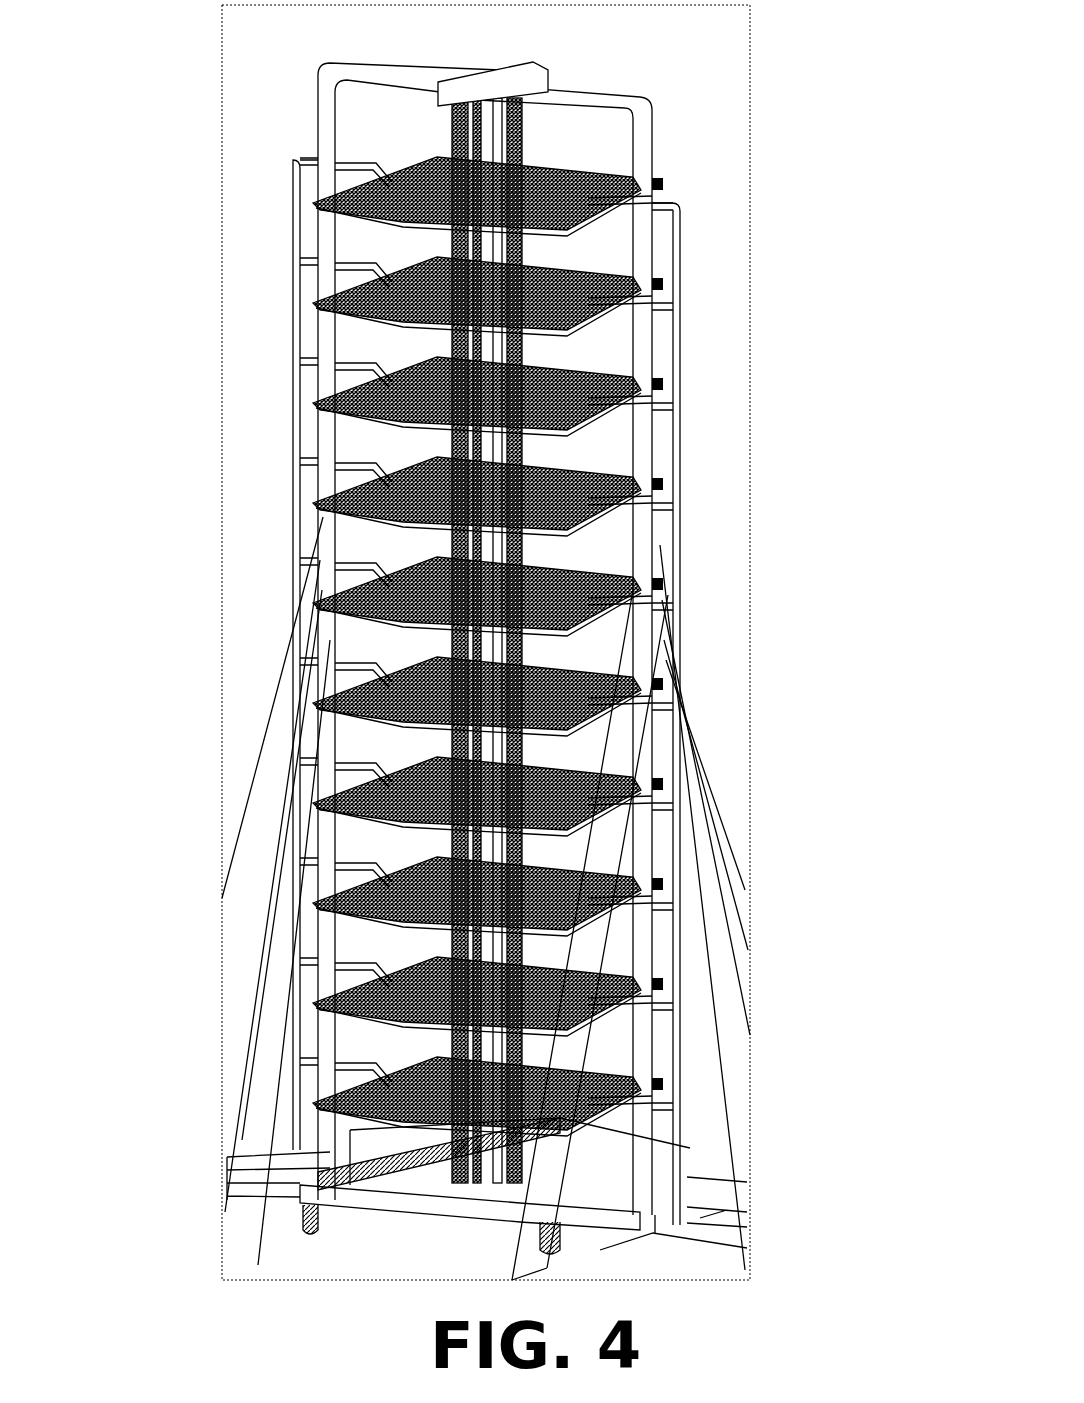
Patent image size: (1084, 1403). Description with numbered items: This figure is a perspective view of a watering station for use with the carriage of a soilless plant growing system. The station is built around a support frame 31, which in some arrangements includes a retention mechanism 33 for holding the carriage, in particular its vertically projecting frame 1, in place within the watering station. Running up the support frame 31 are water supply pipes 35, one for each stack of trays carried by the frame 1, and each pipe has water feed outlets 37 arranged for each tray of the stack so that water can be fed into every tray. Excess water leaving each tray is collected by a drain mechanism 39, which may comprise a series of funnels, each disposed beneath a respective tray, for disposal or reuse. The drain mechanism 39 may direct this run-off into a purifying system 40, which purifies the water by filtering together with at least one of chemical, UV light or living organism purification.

The frame 1 is at (448, 126).
The support frame 31 is at (653, 148).
The retention mechanism 33 is at (538, 62).
The water supply pipes 35 is at (683, 345).
The water feed outlets 37 is at (661, 790).
The drain mechanism 39 is at (385, 1117).
The purifying system 40 is at (268, 1135).